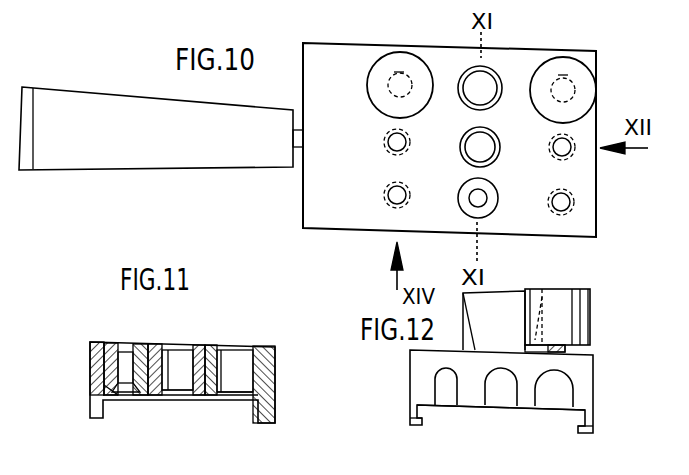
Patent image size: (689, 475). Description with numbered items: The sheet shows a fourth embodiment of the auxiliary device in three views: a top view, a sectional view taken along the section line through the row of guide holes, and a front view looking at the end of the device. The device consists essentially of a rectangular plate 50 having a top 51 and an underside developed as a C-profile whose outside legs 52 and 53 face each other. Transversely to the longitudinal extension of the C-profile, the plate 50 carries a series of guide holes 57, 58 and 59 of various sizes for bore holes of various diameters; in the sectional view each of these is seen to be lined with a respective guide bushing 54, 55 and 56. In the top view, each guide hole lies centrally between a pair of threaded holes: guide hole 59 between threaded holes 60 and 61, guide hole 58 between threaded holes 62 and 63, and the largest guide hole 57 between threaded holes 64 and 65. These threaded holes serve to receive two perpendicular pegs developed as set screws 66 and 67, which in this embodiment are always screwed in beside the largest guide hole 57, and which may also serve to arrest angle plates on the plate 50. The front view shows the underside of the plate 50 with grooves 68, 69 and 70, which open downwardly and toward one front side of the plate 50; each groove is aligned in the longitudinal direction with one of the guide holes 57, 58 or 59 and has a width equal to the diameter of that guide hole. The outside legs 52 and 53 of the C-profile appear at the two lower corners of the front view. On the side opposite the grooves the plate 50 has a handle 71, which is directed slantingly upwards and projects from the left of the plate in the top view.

In FIG. 10, the rectangular plate 50 is at (335, 43).
In FIG. 11, the rectangular plate 50 is at (275, 372).
In FIG. 12, the rectangular plate 50 is at (410, 372).
In FIG. 10, the top 51 is at (313, 200).
In FIG. 12, the outside leg 52 is at (412, 430).
In FIG. 12, the outside leg 53 is at (580, 436).
In FIG. 10, the guide bushing 54 is at (488, 68).
In FIG. 11, the guide bushing 54 is at (222, 394).
In FIG. 10, the guide bushing 55 is at (495, 152).
In FIG. 11, the guide bushing 55 is at (168, 393).
In FIG. 10, the guide bushing 56 is at (496, 200).
In FIG. 11, the guide bushing 56 is at (107, 390).
In FIG. 10, the guide hole 57 is at (473, 80).
In FIG. 11, the guide hole 57 is at (234, 357).
In FIG. 10, the guide hole 58 is at (471, 148).
In FIG. 11, the guide hole 58 is at (181, 357).
In FIG. 10, the guide hole 59 is at (476, 200).
In FIG. 11, the guide hole 59 is at (126, 355).
In FIG. 12, the guide hole 59 is at (501, 440).
In FIG. 10, the threaded hole 60 is at (388, 199).
In FIG. 10, the threaded hole 61 is at (557, 211).
In FIG. 10, the threaded hole 62 is at (390, 146).
In FIG. 10, the threaded hole 63 is at (565, 148).
In FIG. 10, the threaded hole 64 is at (398, 72).
In FIG. 10, the threaded hole 65 is at (563, 75).
In FIG. 10, the set screw 66 is at (378, 100).
In FIG. 10, the set screw 67 is at (582, 101).
In FIG. 12, the set screw 67 is at (588, 312).
In FIG. 12, the groove 68 is at (553, 395).
In FIG. 12, the groove 69 is at (500, 395).
In FIG. 12, the groove 70 is at (447, 400).
In FIG. 10, the handle 71 is at (115, 100).